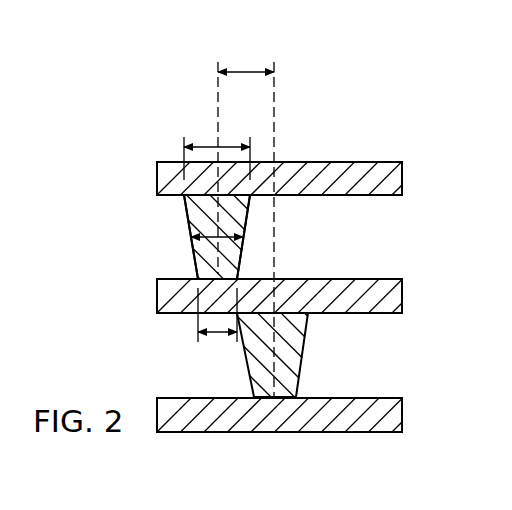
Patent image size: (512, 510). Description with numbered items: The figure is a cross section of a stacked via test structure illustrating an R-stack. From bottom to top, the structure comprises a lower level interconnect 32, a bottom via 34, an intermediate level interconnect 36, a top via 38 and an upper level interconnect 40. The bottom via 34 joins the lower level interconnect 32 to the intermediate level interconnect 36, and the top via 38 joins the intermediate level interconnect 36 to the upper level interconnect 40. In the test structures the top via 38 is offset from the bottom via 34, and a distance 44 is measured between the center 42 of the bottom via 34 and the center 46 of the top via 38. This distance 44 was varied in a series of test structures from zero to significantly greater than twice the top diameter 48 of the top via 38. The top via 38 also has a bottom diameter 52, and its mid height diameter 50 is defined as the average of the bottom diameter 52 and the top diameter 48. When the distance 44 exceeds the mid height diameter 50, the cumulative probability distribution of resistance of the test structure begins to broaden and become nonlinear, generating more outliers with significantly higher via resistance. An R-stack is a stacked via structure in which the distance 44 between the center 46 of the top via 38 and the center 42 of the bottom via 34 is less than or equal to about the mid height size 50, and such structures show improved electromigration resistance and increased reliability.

The lower level interconnect 32 is at (397, 413).
The bottom via 34 is at (303, 337).
The intermediate level interconnect 36 is at (397, 297).
The top via 38 is at (193, 222).
The upper level interconnect 40 is at (398, 177).
The center of bottom via 42 is at (274, 117).
The distance 44 is at (247, 70).
The center of top via 46 is at (218, 88).
The top diameter 48 is at (208, 146).
The mid height diameter 50 is at (213, 242).
The bottom diameter 52 is at (213, 341).